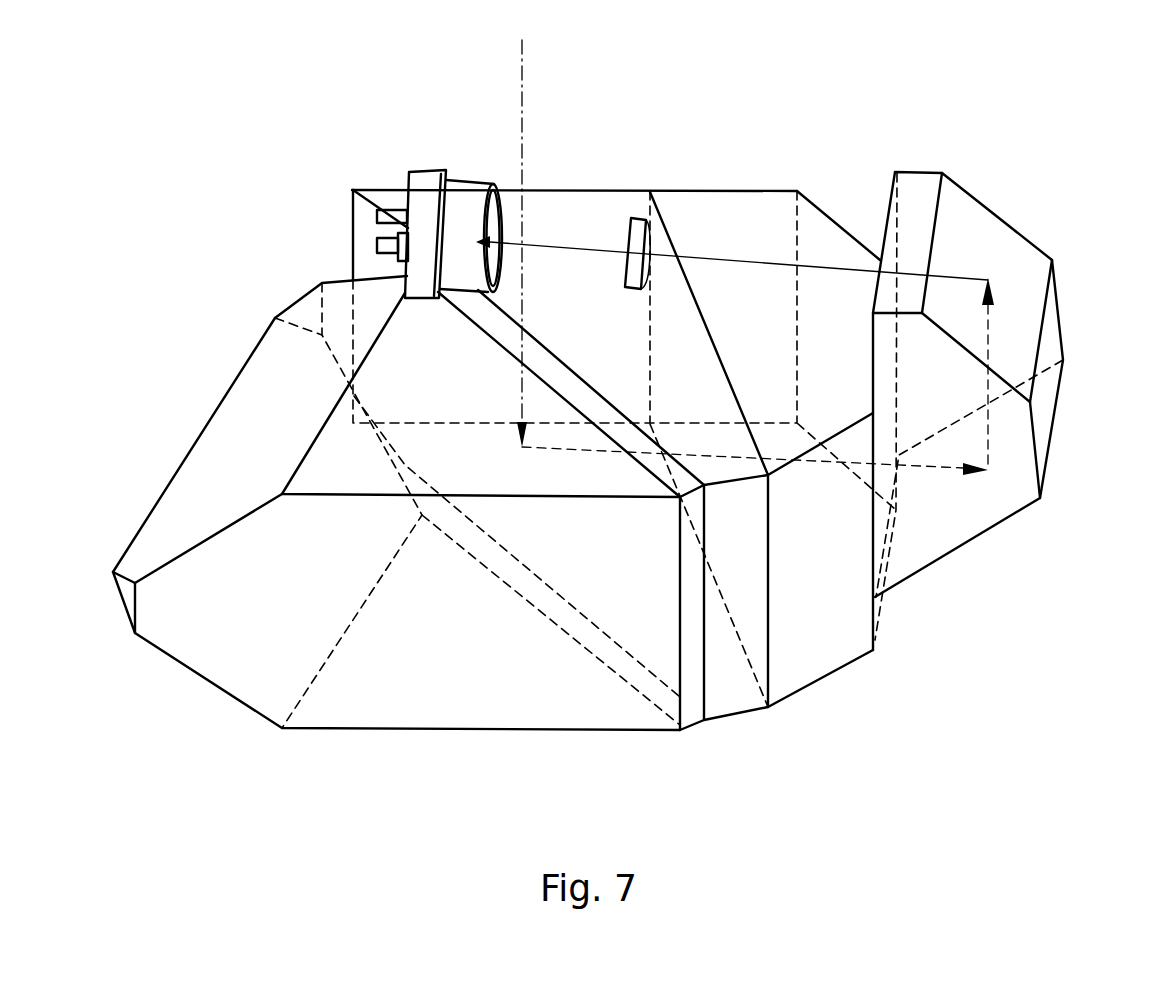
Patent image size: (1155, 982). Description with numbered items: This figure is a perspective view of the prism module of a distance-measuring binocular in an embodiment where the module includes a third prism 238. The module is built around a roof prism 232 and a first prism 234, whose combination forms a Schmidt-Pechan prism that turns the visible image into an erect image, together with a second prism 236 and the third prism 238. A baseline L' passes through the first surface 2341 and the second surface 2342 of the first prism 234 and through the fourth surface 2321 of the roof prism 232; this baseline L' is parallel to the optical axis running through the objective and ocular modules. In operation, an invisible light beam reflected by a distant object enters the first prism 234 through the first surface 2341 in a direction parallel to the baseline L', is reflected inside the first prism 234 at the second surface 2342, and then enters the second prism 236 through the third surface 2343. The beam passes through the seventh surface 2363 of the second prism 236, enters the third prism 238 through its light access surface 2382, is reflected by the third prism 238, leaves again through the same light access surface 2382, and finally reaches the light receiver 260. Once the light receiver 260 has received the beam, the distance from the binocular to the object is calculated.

The roof prism 232 is at (393, 675).
The fourth surface 2321 is at (682, 660).
The first prism 234 is at (583, 223).
The first surface 2341 is at (394, 188).
The second surface 2342 is at (698, 622).
The third surface 2343 is at (768, 533).
The second prism 236 is at (731, 230).
The seventh surface 2363 is at (875, 613).
The third prism 238 is at (1013, 193).
The light access surface 2382 is at (870, 367).
The light receiver 260 is at (450, 218).
The baseline L' is at (556, 228).